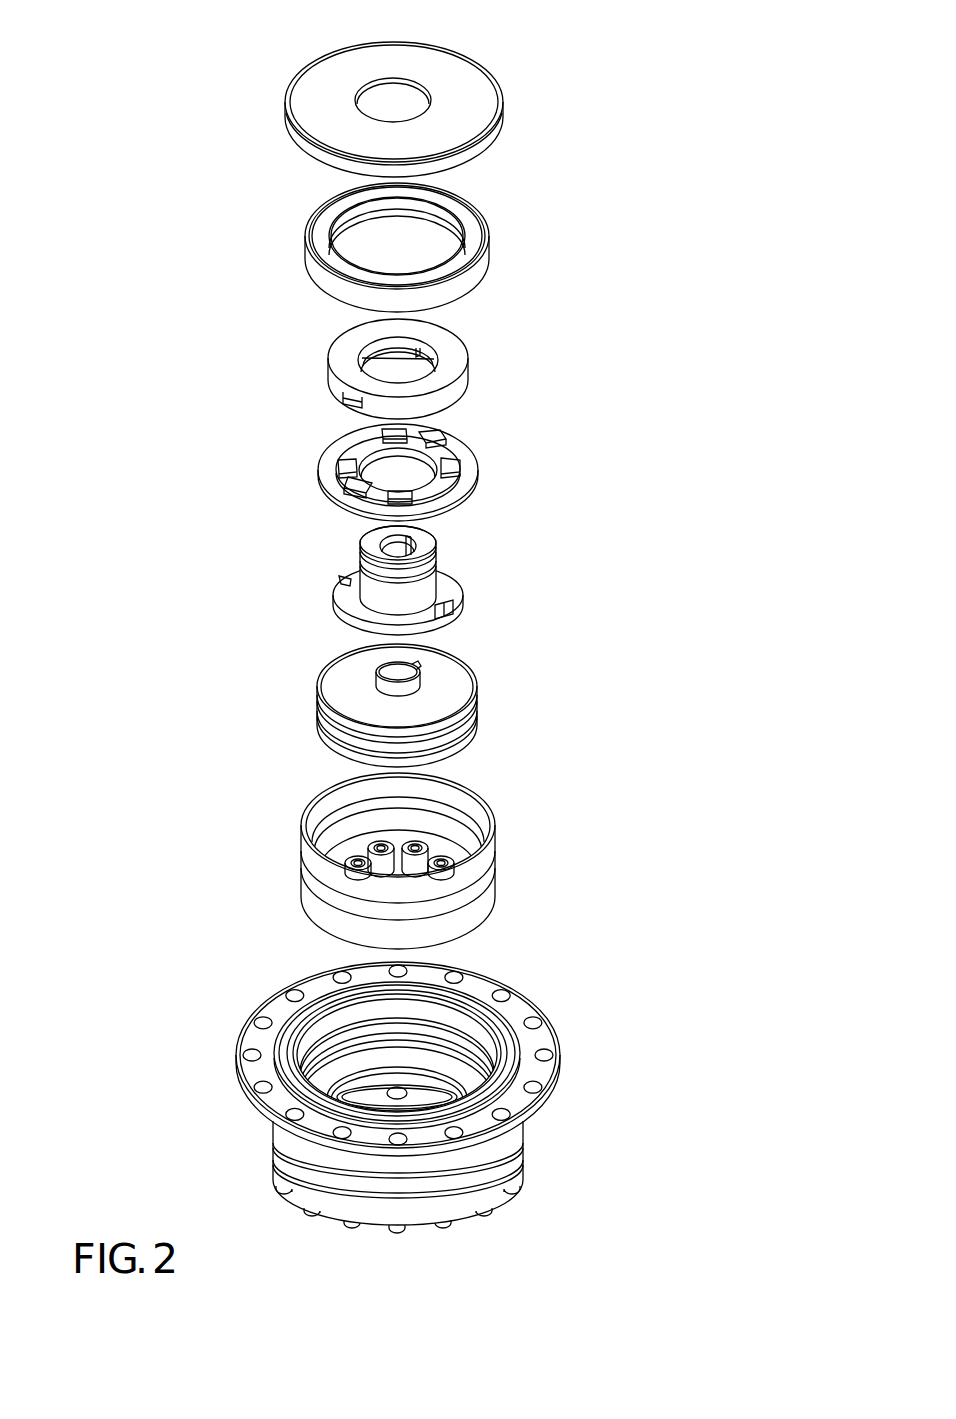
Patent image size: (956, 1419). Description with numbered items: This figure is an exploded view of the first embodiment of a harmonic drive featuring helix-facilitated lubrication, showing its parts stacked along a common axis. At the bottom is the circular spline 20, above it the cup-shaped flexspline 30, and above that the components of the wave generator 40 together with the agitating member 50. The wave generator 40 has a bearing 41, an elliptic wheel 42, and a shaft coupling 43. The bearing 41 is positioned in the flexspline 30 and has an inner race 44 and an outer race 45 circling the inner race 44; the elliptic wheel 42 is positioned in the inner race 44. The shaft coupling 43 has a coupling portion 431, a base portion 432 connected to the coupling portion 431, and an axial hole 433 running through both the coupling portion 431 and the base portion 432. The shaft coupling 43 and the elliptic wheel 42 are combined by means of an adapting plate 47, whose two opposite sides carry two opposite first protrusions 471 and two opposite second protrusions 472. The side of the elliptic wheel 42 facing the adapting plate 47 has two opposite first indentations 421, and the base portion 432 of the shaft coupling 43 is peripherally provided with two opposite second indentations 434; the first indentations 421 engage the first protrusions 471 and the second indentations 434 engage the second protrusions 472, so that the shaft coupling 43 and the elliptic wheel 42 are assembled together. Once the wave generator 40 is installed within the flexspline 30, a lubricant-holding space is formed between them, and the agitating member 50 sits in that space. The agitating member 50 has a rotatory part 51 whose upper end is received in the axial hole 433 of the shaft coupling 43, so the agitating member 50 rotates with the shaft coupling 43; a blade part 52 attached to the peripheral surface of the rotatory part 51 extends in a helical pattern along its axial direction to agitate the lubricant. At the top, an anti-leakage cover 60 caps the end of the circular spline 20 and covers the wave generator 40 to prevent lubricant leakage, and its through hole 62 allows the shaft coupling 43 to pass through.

The circular spline 20 is at (549, 1150).
The flexspline 30 is at (521, 877).
The wave generator 40 is at (433, 412).
The bearing 41 is at (415, 247).
The elliptic wheel 42 is at (403, 369).
The first indentations 421 is at (352, 408).
The shaft coupling 43 is at (399, 565).
The coupling portion 431 is at (375, 548).
The base portion 432 is at (353, 608).
The axial hole 433 is at (385, 543).
The second indentations 434 is at (355, 572).
The inner race 44 is at (322, 225).
The outer race 45 is at (329, 282).
The adapting plate 47 is at (405, 466).
The first protrusions 471 is at (357, 471).
The second protrusions 472 is at (363, 461).
The agitating member 50 is at (463, 705).
The rotatory part 51 is at (435, 685).
The blade part 52 is at (460, 732).
The anti-leakage cover 60 is at (388, 97).
The through hole 62 is at (398, 100).